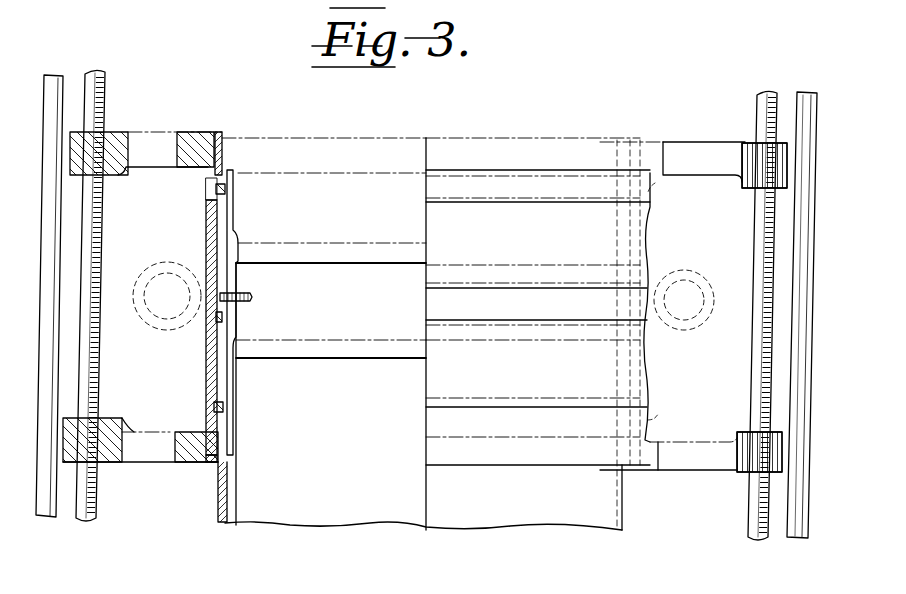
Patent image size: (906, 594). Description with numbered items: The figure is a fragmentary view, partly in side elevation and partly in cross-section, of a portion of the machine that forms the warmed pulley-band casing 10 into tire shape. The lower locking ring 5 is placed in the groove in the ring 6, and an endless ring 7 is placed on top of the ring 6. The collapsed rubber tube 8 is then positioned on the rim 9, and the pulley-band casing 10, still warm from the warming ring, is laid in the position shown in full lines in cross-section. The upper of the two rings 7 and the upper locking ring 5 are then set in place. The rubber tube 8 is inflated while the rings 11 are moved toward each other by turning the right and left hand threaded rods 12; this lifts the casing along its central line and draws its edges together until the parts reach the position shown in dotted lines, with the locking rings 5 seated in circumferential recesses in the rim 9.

The locking ring 5 is at (224, 184).
The ring 6 is at (213, 140).
The endless ring 7 is at (205, 198).
The rubber tube 8 is at (160, 318).
The rim 9 is at (235, 284).
The pulley-band casing 10 is at (207, 252).
The ring 11 is at (118, 132).
The threaded rod 12 is at (92, 274).